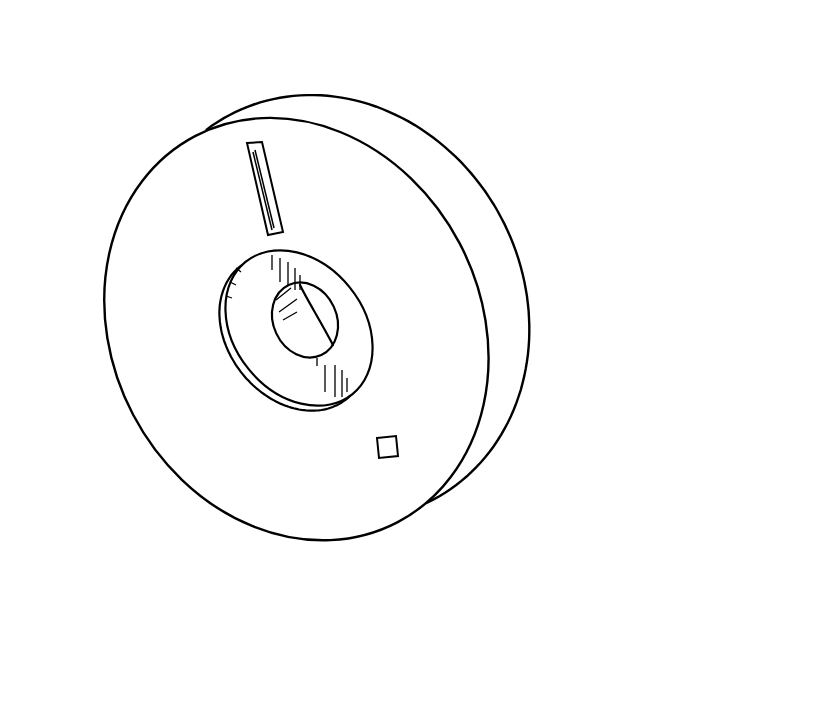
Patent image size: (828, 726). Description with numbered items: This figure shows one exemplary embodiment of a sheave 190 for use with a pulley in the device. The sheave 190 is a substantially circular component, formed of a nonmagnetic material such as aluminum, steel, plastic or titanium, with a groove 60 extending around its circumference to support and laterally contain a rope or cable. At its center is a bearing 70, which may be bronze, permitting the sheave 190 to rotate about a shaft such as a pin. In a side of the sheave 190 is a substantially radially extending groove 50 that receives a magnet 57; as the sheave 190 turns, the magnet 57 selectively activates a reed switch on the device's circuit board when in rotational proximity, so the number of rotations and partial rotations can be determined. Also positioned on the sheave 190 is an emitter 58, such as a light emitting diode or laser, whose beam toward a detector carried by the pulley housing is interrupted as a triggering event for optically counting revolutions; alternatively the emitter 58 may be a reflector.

The sheave 190 is at (567, 191).
The groove 60 is at (518, 323).
The bearing 70 is at (255, 337).
The radially extending groove 50 is at (250, 150).
The magnet 57 is at (270, 206).
The emitter 58 is at (398, 448).